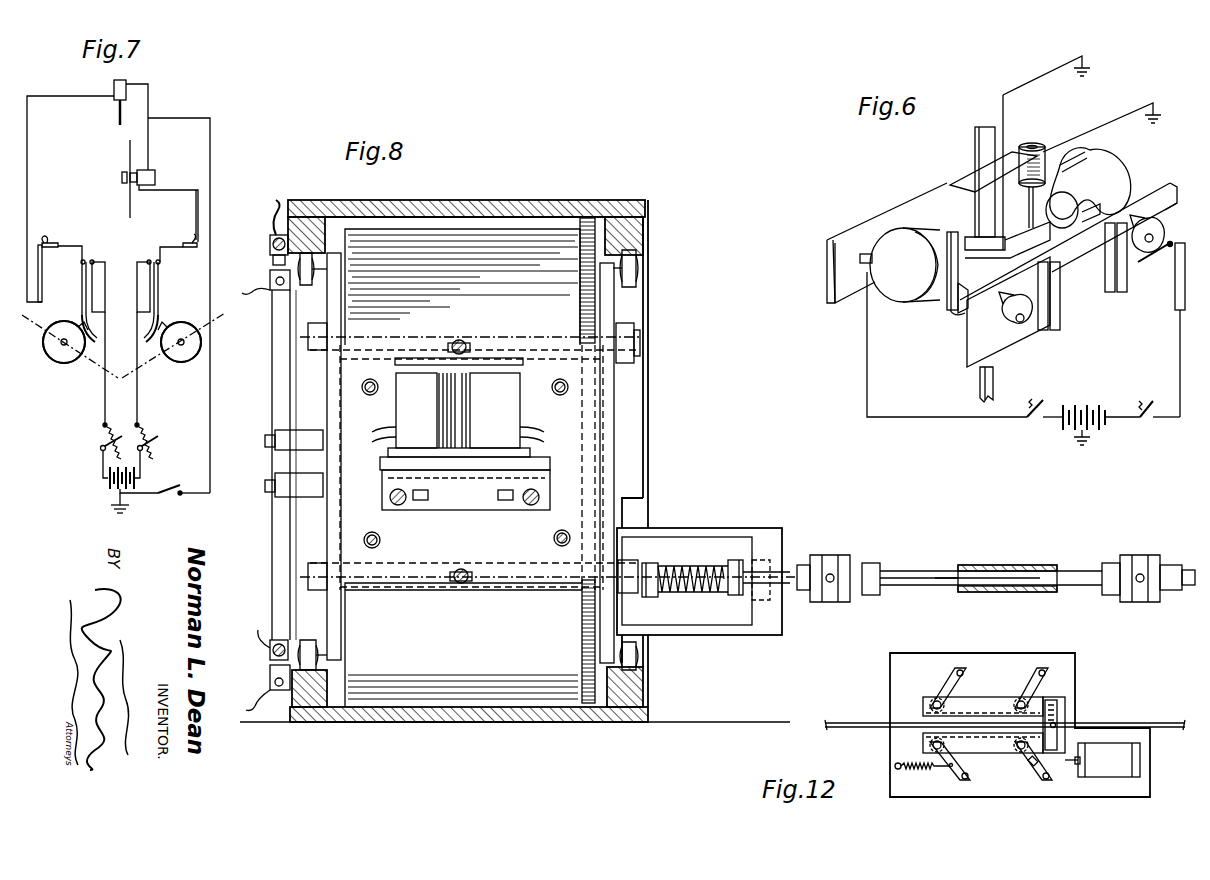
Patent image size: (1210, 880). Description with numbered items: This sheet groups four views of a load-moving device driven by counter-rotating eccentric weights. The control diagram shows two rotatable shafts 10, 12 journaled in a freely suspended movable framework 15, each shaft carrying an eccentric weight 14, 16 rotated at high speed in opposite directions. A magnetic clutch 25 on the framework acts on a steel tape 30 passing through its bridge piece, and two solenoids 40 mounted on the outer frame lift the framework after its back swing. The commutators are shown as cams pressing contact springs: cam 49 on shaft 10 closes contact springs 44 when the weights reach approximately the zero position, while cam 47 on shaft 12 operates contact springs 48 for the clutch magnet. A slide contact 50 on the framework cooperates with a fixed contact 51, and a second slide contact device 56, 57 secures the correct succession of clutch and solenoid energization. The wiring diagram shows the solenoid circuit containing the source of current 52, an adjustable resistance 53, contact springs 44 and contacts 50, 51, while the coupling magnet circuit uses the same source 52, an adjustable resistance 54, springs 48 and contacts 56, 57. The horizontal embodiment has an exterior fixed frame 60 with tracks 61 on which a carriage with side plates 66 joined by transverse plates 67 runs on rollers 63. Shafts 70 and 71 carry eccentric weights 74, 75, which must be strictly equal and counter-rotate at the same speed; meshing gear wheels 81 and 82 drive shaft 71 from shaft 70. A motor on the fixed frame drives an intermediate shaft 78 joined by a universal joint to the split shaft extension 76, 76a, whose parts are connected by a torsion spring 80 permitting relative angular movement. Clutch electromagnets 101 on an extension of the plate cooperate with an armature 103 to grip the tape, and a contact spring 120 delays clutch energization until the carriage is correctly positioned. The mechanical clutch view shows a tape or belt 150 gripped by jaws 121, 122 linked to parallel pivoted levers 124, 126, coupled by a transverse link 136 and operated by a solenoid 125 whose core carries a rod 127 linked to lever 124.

In FIG. 7, the rotatable shaft 10 is at (68, 348).
In FIG. 7, the rotatable shaft 12 is at (195, 346).
In FIG. 6, the rotatable shaft 12 is at (1022, 320).
In FIG. 6, the eccentric weight 14 is at (888, 288).
In FIG. 6, the movable framework 15 is at (850, 245).
In FIG. 6, the eccentric weight 16 is at (1113, 176).
In FIG. 7, the magnetic clutch 25 is at (153, 178).
In FIG. 6, the steel tape 30 is at (975, 138).
In FIG. 7, the solenoid 40 is at (114, 88).
In FIG. 6, the solenoid 40 is at (1040, 165).
In FIG. 7, the contact springs 44 is at (90, 296).
In FIG. 6, the contact springs 44 is at (1121, 283).
In FIG. 7, the cam 47 is at (177, 356).
In FIG. 6, the cam 47 is at (1015, 335).
In FIG. 7, the contact springs 48 is at (157, 292).
In FIG. 6, the contact springs 48 is at (1052, 312).
In FIG. 7, the cam 49 is at (58, 356).
In FIG. 6, the cam 49 is at (1143, 212).
In FIG. 7, the slide contact 50 is at (46, 241).
In FIG. 6, the slide contact 50 is at (1165, 250).
In FIG. 7, the fixed contact 51 is at (42, 290).
In FIG. 6, the fixed contact 51 is at (1178, 290).
In FIG. 7, the source of current 52 is at (108, 481).
In FIG. 6, the source of current 52 is at (1082, 410).
In FIG. 7, the adjustable resistance 53 is at (105, 434).
In FIG. 6, the adjustable resistance 53 is at (1150, 407).
In FIG. 7, the adjustable resistance 54 is at (160, 443).
In FIG. 6, the adjustable resistance 54 is at (1035, 418).
In FIG. 7, the slide contact 56 is at (184, 247).
In FIG. 6, the slide contact 56 is at (958, 312).
In FIG. 7, the fixed slide contact 57 is at (197, 214).
In FIG. 6, the fixed slide contact 57 is at (953, 300).
In FIG. 8, the exterior fixed frame 60 is at (538, 198).
In FIG. 8, the tracks 61 is at (627, 677).
In FIG. 8, the balls or rollers 63 is at (636, 283).
In FIG. 8, the side plates 66 is at (336, 621).
In FIG. 8, the transverse plates 67 is at (522, 356).
In FIG. 8, the shaft 70 is at (392, 575).
In FIG. 8, the shaft 71 is at (408, 338).
In FIG. 8, the eccentric weight 74 is at (470, 233).
In FIG. 8, the eccentric weight 75 is at (474, 670).
In FIG. 8, the shaft extension 76 is at (652, 597).
In FIG. 8, the shaft extension drive portion 76a is at (735, 596).
In FIG. 8, the intermediate shaft 78 is at (898, 568).
In FIG. 8, the torsion spring 80 is at (686, 565).
In FIG. 8, the gear wheel 81 is at (587, 318).
In FIG. 8, the gear wheel 82 is at (590, 703).
In FIG. 8, the clutch electromagnets 101 is at (405, 400).
In FIG. 8, the armature 103 is at (513, 393).
In FIG. 8, the contact spring 120 is at (281, 527).
In FIG. 12, the jaw 121 is at (983, 707).
In FIG. 12, the jaw 122 is at (1004, 745).
In FIG. 12, the pivoted lever 124 is at (952, 773).
In FIG. 12, the solenoid 125 is at (1120, 768).
In FIG. 8, the pivoted lever 126 is at (273, 390).
In FIG. 12, the pivoted lever 126 is at (953, 685).
In FIG. 12, the rod 127 is at (1066, 770).
In FIG. 12, the transverse link 136 is at (1060, 722).
In FIG. 12, the tape or belt 150 is at (1168, 709).